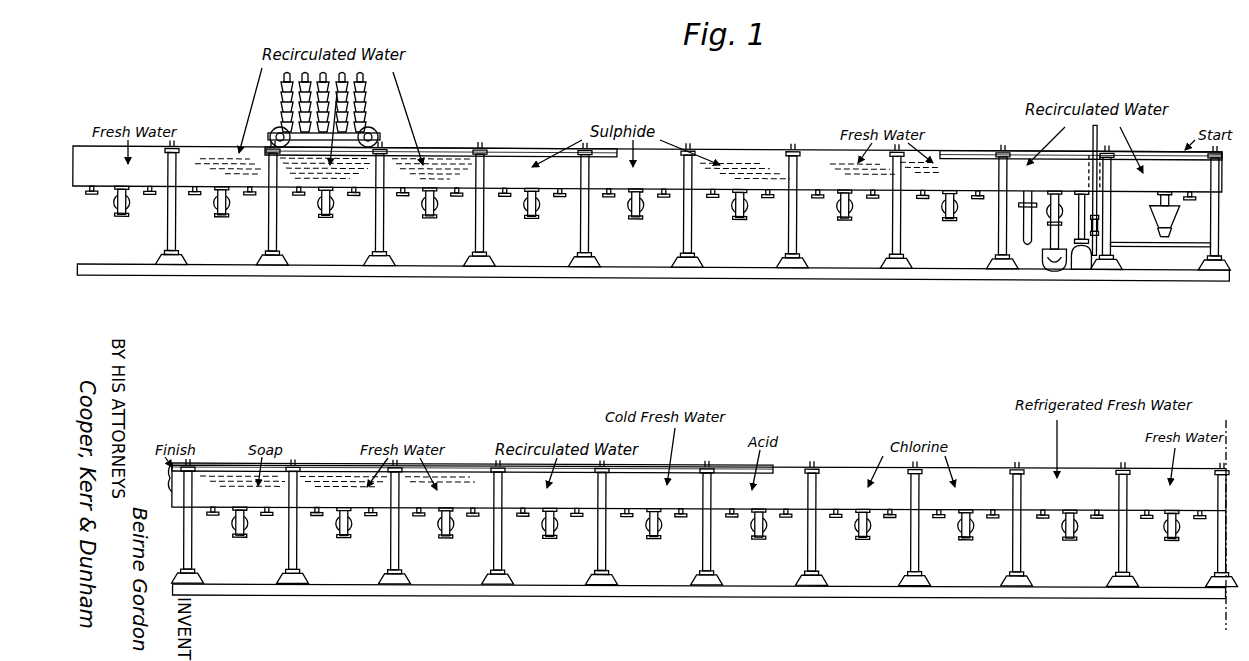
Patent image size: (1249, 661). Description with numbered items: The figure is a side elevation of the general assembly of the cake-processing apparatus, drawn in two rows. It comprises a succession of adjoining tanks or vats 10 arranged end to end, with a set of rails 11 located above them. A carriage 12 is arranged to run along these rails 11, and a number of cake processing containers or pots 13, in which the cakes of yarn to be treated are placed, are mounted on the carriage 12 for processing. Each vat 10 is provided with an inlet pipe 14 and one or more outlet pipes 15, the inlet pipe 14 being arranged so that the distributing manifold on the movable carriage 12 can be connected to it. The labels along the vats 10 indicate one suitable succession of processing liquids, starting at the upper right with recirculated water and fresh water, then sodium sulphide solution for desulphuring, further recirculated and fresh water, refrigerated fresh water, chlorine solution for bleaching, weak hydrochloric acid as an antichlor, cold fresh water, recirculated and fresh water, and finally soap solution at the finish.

The tanks or vats 10 is at (447, 186).
The rails 11 is at (455, 148).
The carriage 12 is at (371, 70).
The cake processing containers or pots 13 is at (285, 113).
The inlet pipe 14 is at (328, 220).
The outlet pipes 15 is at (300, 201).